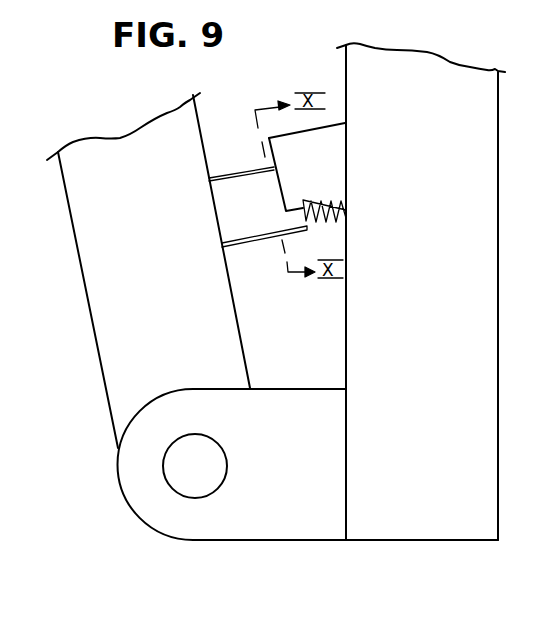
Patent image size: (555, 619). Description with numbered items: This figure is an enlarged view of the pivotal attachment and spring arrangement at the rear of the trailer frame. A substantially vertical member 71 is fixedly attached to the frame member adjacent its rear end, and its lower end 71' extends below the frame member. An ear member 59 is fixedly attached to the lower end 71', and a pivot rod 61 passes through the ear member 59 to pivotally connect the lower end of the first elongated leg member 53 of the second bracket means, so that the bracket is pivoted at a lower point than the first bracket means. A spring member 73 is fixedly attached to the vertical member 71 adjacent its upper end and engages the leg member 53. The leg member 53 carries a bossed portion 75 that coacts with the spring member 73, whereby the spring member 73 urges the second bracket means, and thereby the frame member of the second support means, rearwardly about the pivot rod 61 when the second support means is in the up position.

The first elongated leg member 53 is at (118, 302).
The ear member 59 is at (307, 529).
The pivot rod 61 is at (192, 480).
The vertical member 71 is at (442, 291).
The lower end of vertical member 71' is at (515, 306).
The spring member 73 is at (346, 212).
The bossed portion 75 is at (258, 252).